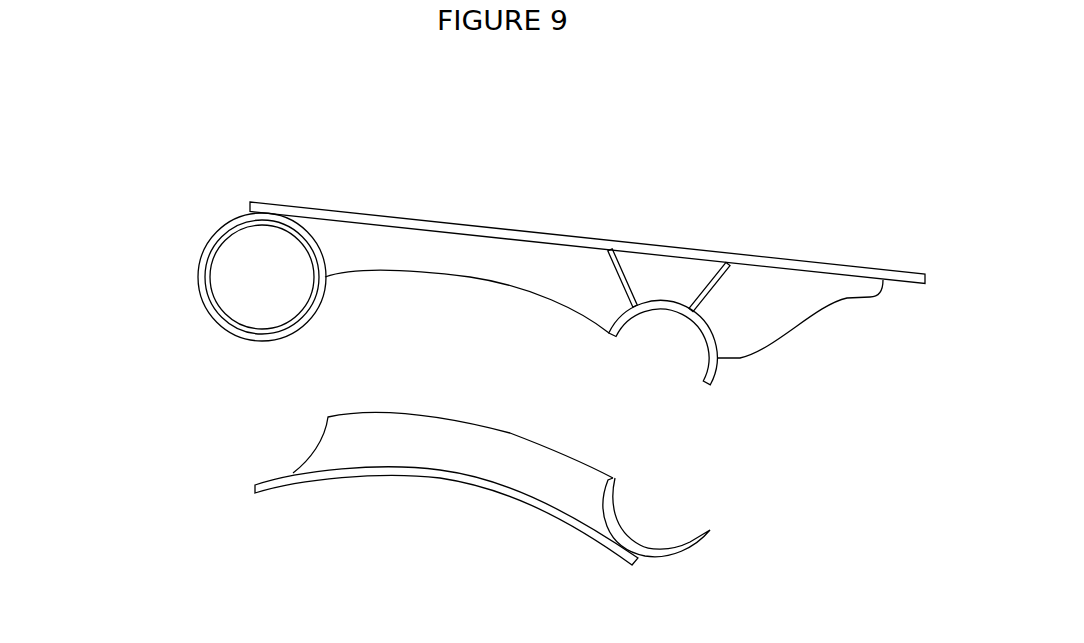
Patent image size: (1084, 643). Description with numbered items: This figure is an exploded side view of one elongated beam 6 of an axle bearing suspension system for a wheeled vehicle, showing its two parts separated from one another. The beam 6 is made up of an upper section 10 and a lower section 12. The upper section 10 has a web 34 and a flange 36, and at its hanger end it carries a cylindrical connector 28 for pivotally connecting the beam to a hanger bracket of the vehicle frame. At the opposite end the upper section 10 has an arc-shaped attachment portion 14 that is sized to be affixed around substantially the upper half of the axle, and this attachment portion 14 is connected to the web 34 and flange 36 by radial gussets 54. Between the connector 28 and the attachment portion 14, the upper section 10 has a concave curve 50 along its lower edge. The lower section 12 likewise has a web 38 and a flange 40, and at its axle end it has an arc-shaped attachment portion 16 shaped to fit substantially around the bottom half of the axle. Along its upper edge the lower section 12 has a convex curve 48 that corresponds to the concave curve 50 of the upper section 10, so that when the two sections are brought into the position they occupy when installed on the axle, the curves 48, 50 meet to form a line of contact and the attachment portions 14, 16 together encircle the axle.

The elongated beam 6 is at (162, 310).
The upper section 10 is at (555, 277).
The lower section 12 is at (523, 473).
The attachment portion 14 is at (718, 377).
The attachment portion 16 is at (690, 543).
The cylindrical connector 28 is at (230, 220).
The web 34 is at (450, 250).
The flange 36 is at (365, 218).
The web 38 is at (357, 452).
The flange 40 is at (432, 478).
The upper edge (convex curve) 48 is at (570, 455).
The concave curve 50 is at (498, 272).
The radial gussets 54 is at (622, 268).